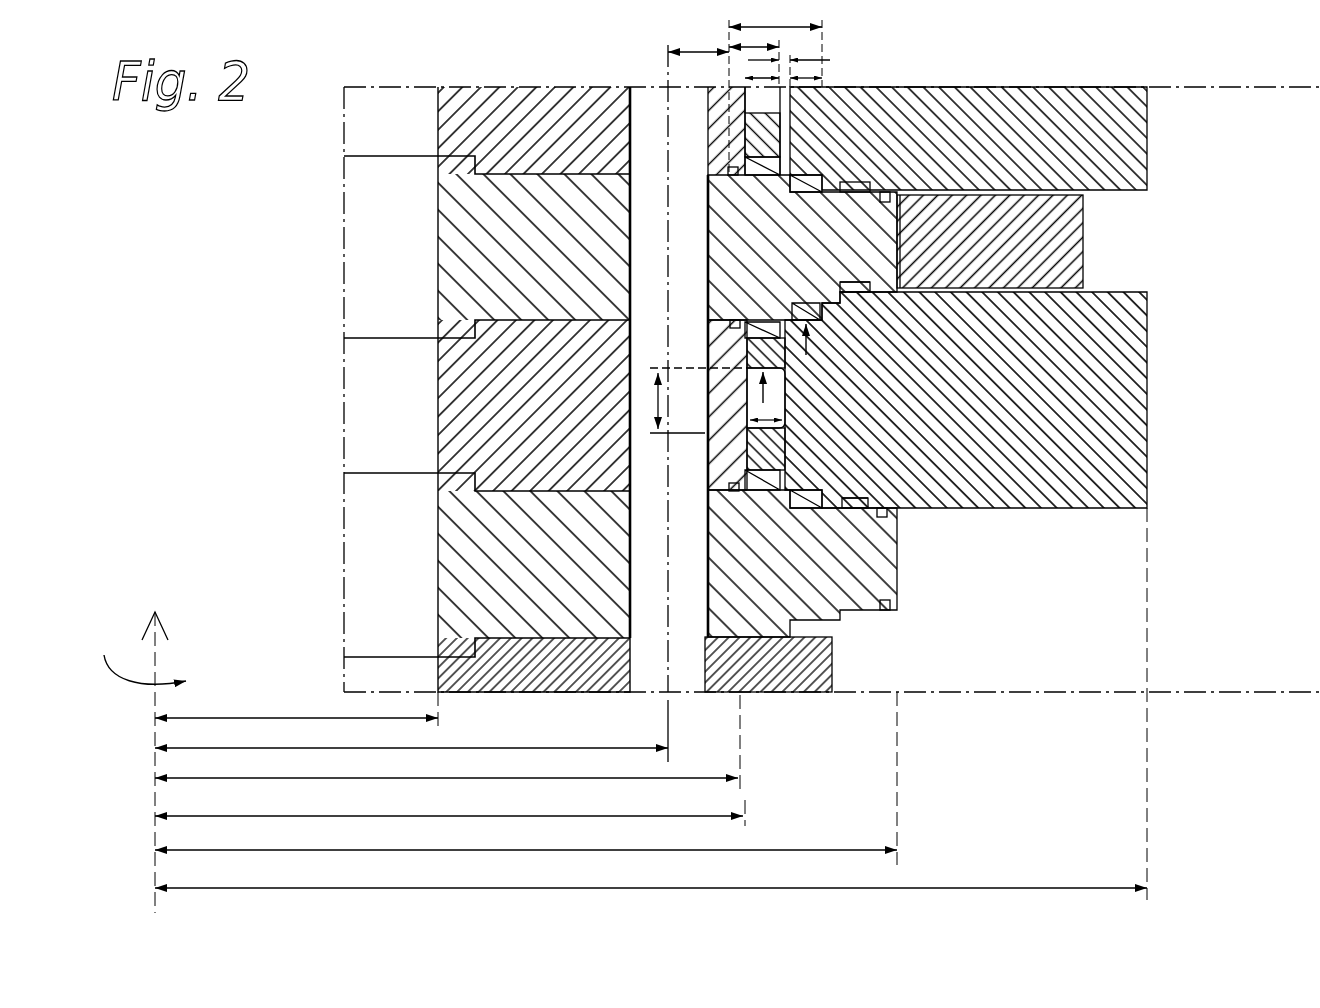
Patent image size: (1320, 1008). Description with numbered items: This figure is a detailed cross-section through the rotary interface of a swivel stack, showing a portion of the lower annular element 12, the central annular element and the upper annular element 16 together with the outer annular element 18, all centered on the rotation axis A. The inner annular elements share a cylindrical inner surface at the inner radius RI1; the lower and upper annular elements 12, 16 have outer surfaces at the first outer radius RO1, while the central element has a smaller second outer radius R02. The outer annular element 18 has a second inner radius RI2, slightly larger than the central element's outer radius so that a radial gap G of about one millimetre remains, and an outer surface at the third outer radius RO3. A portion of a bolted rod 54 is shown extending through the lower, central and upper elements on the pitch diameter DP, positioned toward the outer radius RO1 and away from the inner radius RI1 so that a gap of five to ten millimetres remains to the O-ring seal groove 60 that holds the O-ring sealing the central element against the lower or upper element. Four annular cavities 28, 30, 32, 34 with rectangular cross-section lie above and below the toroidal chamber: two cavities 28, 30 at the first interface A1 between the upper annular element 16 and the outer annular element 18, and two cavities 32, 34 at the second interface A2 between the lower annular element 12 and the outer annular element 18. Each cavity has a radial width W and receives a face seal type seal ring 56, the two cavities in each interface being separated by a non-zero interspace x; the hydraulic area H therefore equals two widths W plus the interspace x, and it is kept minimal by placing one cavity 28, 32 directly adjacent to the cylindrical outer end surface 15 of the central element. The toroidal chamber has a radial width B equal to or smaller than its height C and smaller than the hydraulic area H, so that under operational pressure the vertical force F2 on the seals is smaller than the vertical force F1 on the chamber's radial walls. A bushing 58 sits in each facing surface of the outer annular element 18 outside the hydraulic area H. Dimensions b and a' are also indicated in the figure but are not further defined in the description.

The lower annular element 12 is at (873, 575).
The cylindrical outer end surface 15 is at (750, 436).
The upper annular element 16 is at (857, 248).
The outer annular element 18 is at (1066, 428).
The annular cavity 28 is at (823, 385).
The annular cavity 30 is at (823, 322).
The annular cavity 32 is at (780, 467).
The annular cavity 34 is at (800, 494).
The bolted rod 54 is at (648, 574).
The seal ring 56 is at (808, 306).
The bushing 58 is at (862, 297).
The O-ring seal groove 60 is at (737, 318).
The rotation axis A is at (180, 678).
The first interface A1 is at (925, 302).
The second interface A2 is at (942, 521).
The radial width of the toroidal chamber B is at (760, 420).
The height of the toroidal chamber C is at (656, 402).
The vertical force on the toroidal chamber walls F1 is at (765, 387).
The vertical force on the seals F2 is at (780, 327).
The radial gap G is at (745, 462).
The hydraulic area H is at (812, 27).
The radial width of annular cavity W is at (745, 78).
The interspace x is at (828, 60).
The width b is at (700, 52).
The width a' is at (738, 29).
The pitch diameter DP is at (580, 748).
The inner radius RI1 is at (268, 718).
The second inner radius RI2 is at (666, 816).
The second outer radius R02 is at (556, 778).
The first outer radius RO1 is at (800, 850).
The third outer radius RO3 is at (1015, 888).